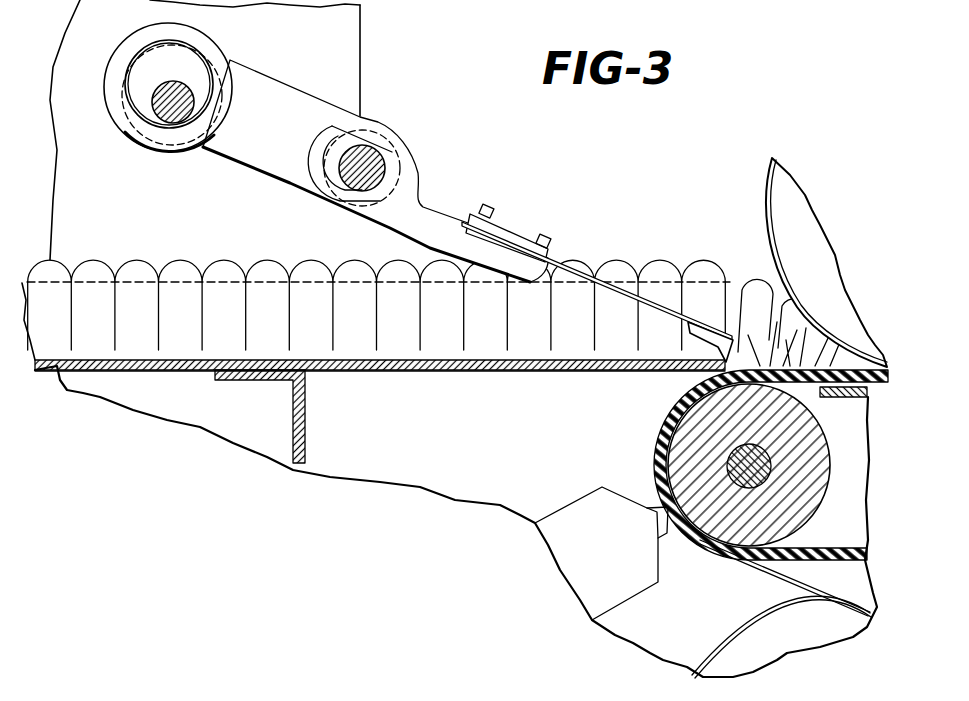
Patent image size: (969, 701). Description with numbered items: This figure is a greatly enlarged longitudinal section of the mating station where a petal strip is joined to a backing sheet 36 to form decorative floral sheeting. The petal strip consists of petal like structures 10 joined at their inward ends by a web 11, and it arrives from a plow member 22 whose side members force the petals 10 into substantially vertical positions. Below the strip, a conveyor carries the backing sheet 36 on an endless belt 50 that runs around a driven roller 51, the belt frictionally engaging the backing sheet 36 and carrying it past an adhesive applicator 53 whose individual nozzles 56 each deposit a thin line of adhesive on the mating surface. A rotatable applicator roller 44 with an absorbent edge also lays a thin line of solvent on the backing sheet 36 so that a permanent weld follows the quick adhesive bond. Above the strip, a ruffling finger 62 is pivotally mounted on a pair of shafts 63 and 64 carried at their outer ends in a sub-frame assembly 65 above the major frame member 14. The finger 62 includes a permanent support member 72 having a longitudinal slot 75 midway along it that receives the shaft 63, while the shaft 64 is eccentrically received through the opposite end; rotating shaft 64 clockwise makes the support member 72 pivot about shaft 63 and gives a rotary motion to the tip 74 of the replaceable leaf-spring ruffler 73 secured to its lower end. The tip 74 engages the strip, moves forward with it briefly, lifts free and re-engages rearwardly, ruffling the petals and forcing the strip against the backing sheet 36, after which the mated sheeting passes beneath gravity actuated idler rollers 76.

The petal like structures 10 is at (183, 263).
The web 11 is at (92, 359).
The major frame member 14 is at (305, 437).
The plow member 22 is at (527, 371).
The backing sheet 36 is at (773, 582).
The applicator roller 44 is at (728, 635).
The endless belt 50 is at (850, 528).
The driven roller 51 is at (730, 543).
The adhesive applicator 53 is at (565, 510).
The nozzle 56 is at (648, 508).
The ruffling finger 62 is at (280, 73).
The shaft 63 is at (370, 155).
The shaft 64 is at (163, 114).
The sub-frame assembly 65 is at (361, 59).
The support member 72 is at (258, 170).
The ruffler 73 is at (586, 265).
The tip 74 is at (720, 345).
The longitudinal slot 75 is at (318, 178).
The idler rollers 76 is at (775, 204).